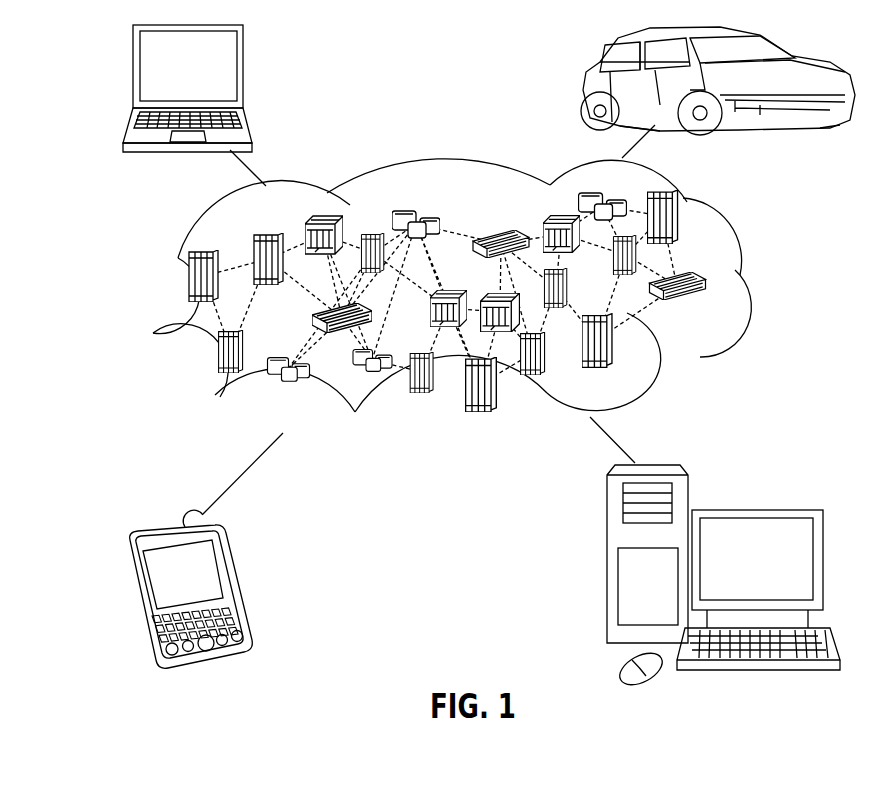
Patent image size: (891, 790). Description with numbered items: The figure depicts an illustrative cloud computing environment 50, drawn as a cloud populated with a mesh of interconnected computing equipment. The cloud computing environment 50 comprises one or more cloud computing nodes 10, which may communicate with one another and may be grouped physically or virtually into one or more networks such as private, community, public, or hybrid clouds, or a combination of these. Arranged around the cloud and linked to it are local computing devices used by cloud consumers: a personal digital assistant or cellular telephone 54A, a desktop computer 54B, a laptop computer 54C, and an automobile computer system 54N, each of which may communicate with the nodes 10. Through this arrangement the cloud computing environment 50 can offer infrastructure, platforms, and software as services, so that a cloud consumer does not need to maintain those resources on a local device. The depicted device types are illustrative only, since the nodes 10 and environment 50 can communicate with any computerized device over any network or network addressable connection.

The cloud computing nodes 10 is at (712, 310).
The cloud computing environment 50 is at (757, 280).
The personal digital assistant (PDA) or cellular telephone 54A is at (230, 580).
The desktop computer 54B is at (757, 510).
The laptop computer 54C is at (245, 72).
The automobile computer system 54N is at (583, 82).